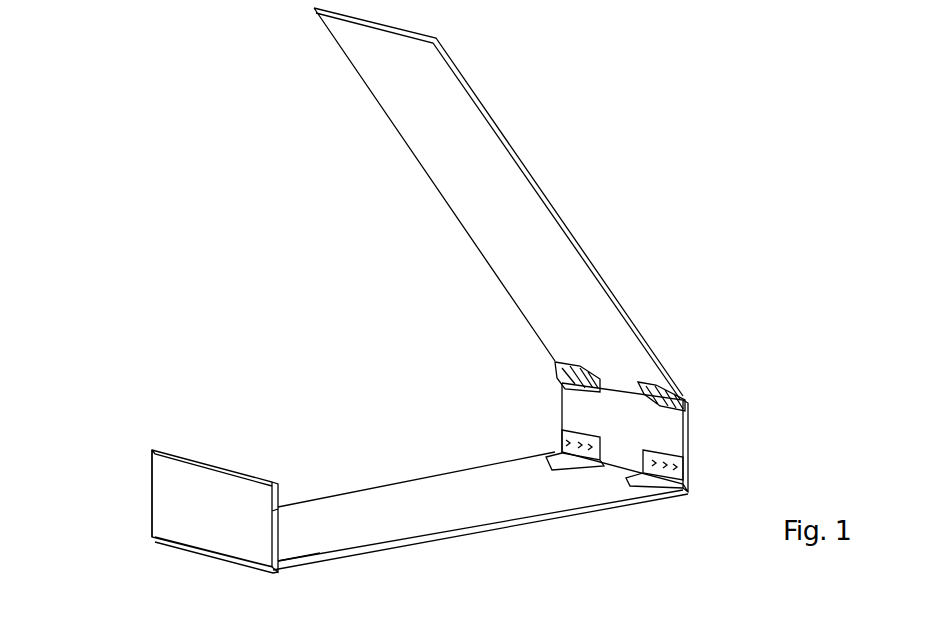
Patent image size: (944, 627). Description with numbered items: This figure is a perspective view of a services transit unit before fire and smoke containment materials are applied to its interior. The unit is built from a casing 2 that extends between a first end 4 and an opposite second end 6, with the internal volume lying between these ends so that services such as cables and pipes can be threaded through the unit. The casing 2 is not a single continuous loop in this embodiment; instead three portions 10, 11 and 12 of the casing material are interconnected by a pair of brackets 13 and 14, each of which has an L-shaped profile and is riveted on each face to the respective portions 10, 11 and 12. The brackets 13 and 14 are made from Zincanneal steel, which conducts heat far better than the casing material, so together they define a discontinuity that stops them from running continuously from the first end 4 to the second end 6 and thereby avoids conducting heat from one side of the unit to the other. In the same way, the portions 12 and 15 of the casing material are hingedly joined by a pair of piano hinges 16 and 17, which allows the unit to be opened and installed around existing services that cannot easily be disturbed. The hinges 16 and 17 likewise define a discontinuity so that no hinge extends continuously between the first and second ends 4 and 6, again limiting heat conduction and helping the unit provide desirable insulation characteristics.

The casing 2 is at (375, 468).
The first end 4 is at (152, 493).
The second end 6 is at (335, 565).
The portion of casing material 10 is at (198, 515).
The portion of casing material 11 is at (463, 508).
The portion of casing material 12 is at (660, 438).
The bracket 13 is at (572, 443).
The bracket 14 is at (667, 470).
The portion of casing material 15 is at (482, 180).
The piano hinge 16 is at (562, 380).
The piano hinge 17 is at (675, 380).